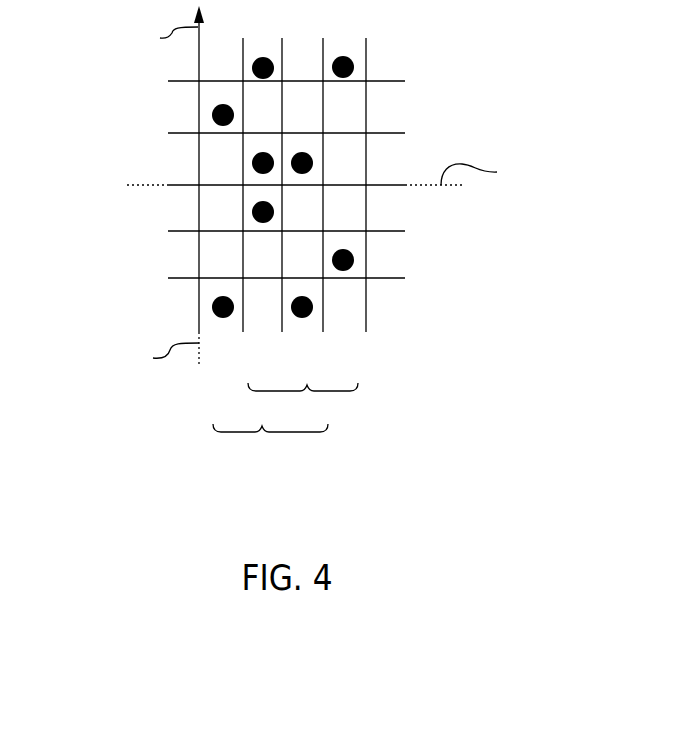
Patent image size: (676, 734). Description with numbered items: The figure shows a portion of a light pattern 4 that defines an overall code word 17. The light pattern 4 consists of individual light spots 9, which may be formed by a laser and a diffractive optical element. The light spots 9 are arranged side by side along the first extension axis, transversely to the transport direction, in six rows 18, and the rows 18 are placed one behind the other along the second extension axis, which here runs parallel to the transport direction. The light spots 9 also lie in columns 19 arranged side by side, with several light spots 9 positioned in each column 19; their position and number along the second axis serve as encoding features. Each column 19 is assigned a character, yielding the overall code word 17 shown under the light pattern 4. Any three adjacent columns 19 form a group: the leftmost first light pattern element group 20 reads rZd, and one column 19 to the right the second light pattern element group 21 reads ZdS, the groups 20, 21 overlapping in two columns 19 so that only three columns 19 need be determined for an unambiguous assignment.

The light pattern 4 is at (291, 189).
The light spot 9 is at (204, 115).
The overall code word 17 is at (378, 396).
The row 18 is at (188, 157).
The column 19 is at (347, 42).
The first light pattern element group 20 is at (285, 410).
The second light pattern element group 21 is at (303, 384).